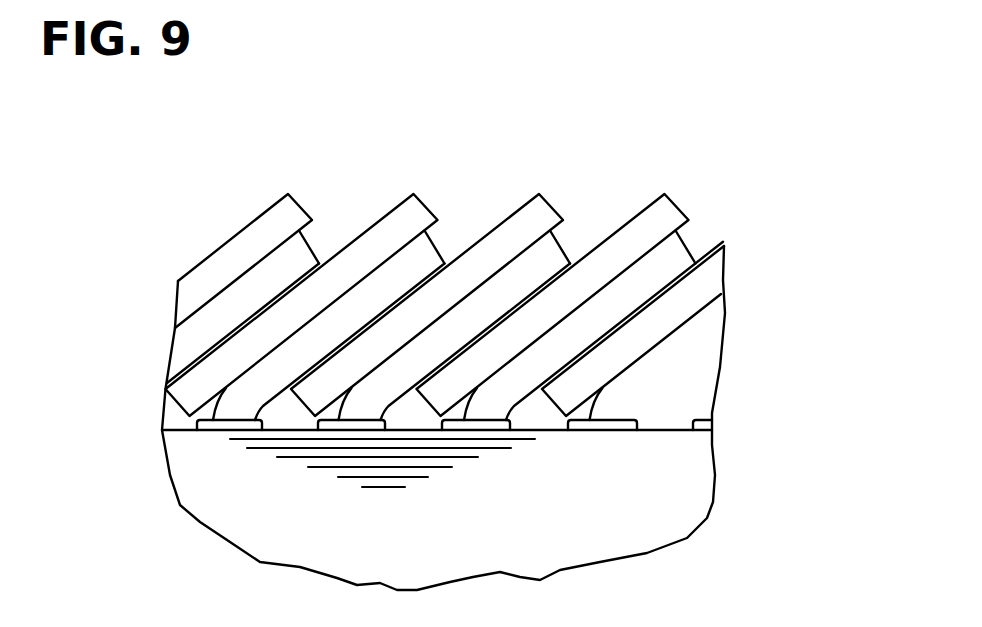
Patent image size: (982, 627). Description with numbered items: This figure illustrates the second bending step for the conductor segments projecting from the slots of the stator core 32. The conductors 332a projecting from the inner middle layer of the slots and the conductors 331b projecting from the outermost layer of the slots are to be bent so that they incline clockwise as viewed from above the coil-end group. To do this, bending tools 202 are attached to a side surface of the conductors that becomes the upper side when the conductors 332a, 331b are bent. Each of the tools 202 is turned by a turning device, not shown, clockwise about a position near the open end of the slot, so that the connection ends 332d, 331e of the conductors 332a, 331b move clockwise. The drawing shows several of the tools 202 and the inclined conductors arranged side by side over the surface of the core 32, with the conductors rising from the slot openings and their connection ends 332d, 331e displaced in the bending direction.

The bending tool 202 is at (405, 218).
The conductor projecting from the inner middle layer 332a is at (470, 283).
The conductor projecting from the outermost layer 331b is at (338, 322).
The connection end 332d is at (561, 163).
The connection end 331e is at (438, 250).
The stator core 32 is at (690, 516).